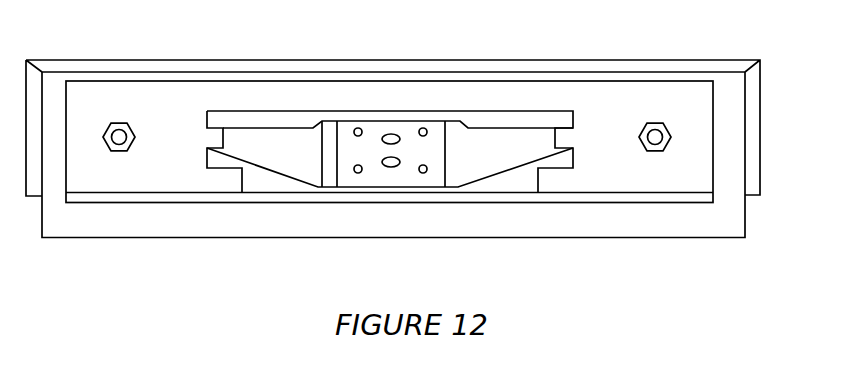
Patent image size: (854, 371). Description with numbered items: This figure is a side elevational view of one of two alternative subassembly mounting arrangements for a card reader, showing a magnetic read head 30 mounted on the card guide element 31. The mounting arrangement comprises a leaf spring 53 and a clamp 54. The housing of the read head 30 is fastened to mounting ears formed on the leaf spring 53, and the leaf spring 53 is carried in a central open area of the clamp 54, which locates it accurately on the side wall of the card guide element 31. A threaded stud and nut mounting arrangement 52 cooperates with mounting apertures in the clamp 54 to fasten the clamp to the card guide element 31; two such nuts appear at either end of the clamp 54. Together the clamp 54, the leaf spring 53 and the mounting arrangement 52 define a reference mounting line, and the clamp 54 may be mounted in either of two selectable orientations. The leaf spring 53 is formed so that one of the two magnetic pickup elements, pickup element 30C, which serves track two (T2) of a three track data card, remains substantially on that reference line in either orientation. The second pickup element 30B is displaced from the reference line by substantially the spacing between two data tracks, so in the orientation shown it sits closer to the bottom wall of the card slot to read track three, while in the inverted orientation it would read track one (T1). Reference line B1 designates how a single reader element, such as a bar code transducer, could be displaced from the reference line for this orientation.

The read head 30 is at (398, 172).
The second pickup element 30B is at (386, 168).
The pickup element 30C is at (390, 128).
The card guide element 31 is at (672, 228).
The threaded stud and nut mounting arrangement 52 is at (119, 122).
The leaf spring 53 is at (303, 175).
The clamp 54 is at (607, 108).
The reference line B1 is at (337, 150).
The track one T1 is at (400, 139).
The track two T2 is at (400, 162).